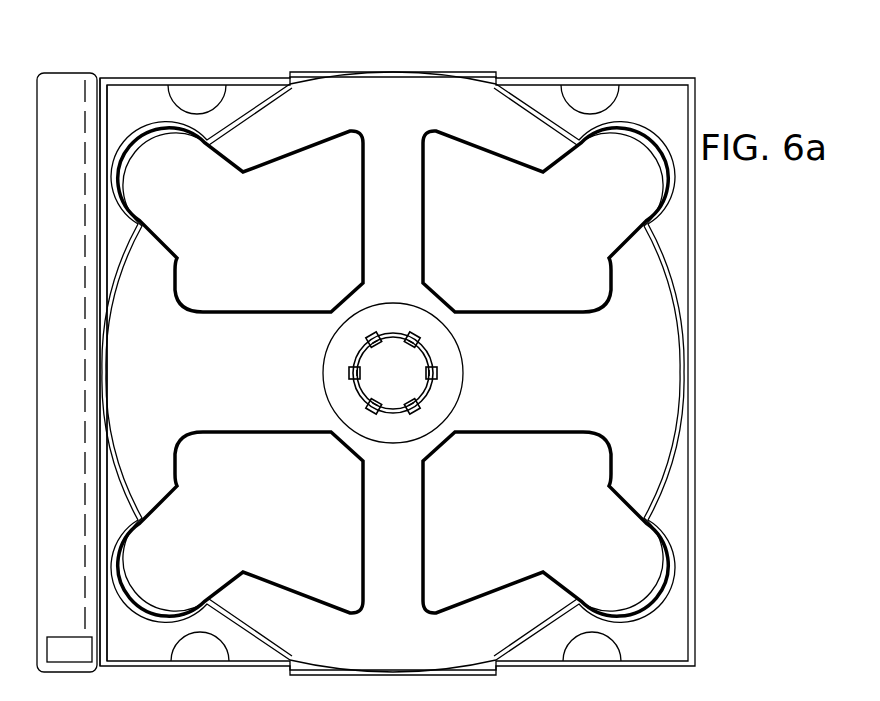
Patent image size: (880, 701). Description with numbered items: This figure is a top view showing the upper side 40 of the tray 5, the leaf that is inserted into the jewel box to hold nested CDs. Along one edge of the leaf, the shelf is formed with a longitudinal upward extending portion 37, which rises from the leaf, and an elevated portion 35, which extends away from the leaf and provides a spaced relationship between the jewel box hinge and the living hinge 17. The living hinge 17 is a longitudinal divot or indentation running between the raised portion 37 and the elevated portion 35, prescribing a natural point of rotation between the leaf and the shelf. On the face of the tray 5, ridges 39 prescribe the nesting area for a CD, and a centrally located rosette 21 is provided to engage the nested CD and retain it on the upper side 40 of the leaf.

The tray 5 is at (586, 70).
The living hinge 17 is at (85, 78).
The rosette 21 is at (437, 375).
The elevated portion 35 is at (50, 90).
The longitudinal upward extending portion 37 is at (102, 95).
The ridges 39 is at (668, 487).
The upper side 40 is at (405, 105).